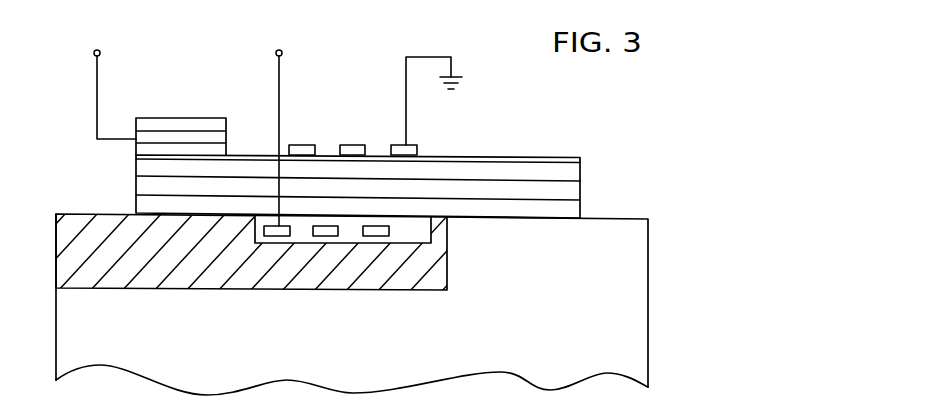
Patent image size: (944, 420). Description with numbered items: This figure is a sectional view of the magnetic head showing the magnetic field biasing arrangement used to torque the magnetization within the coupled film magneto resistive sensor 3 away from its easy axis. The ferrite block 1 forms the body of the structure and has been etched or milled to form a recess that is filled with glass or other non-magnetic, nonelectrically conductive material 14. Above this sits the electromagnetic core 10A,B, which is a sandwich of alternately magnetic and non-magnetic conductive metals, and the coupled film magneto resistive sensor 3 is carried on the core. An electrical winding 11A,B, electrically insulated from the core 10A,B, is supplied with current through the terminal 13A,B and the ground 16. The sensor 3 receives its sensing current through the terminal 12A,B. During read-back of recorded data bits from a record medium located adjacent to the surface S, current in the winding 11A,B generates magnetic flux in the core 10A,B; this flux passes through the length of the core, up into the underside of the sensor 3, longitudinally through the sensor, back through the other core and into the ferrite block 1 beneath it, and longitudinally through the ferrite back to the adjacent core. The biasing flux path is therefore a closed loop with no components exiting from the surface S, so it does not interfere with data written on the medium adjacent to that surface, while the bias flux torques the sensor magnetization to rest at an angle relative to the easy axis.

The ferrite block 1 is at (625, 218).
The surface S is at (55, 357).
The coupled film magneto resistive sensor 3 is at (233, 120).
The electromagnetic core 10A,B is at (583, 217).
The electrical winding 11A,B is at (305, 145).
The terminal 12A,B is at (107, 82).
The terminal 13A,B is at (323, 130).
The non-magnetic, nonelectrically conductive material 14 is at (70, 215).
The ground 16 is at (428, 57).